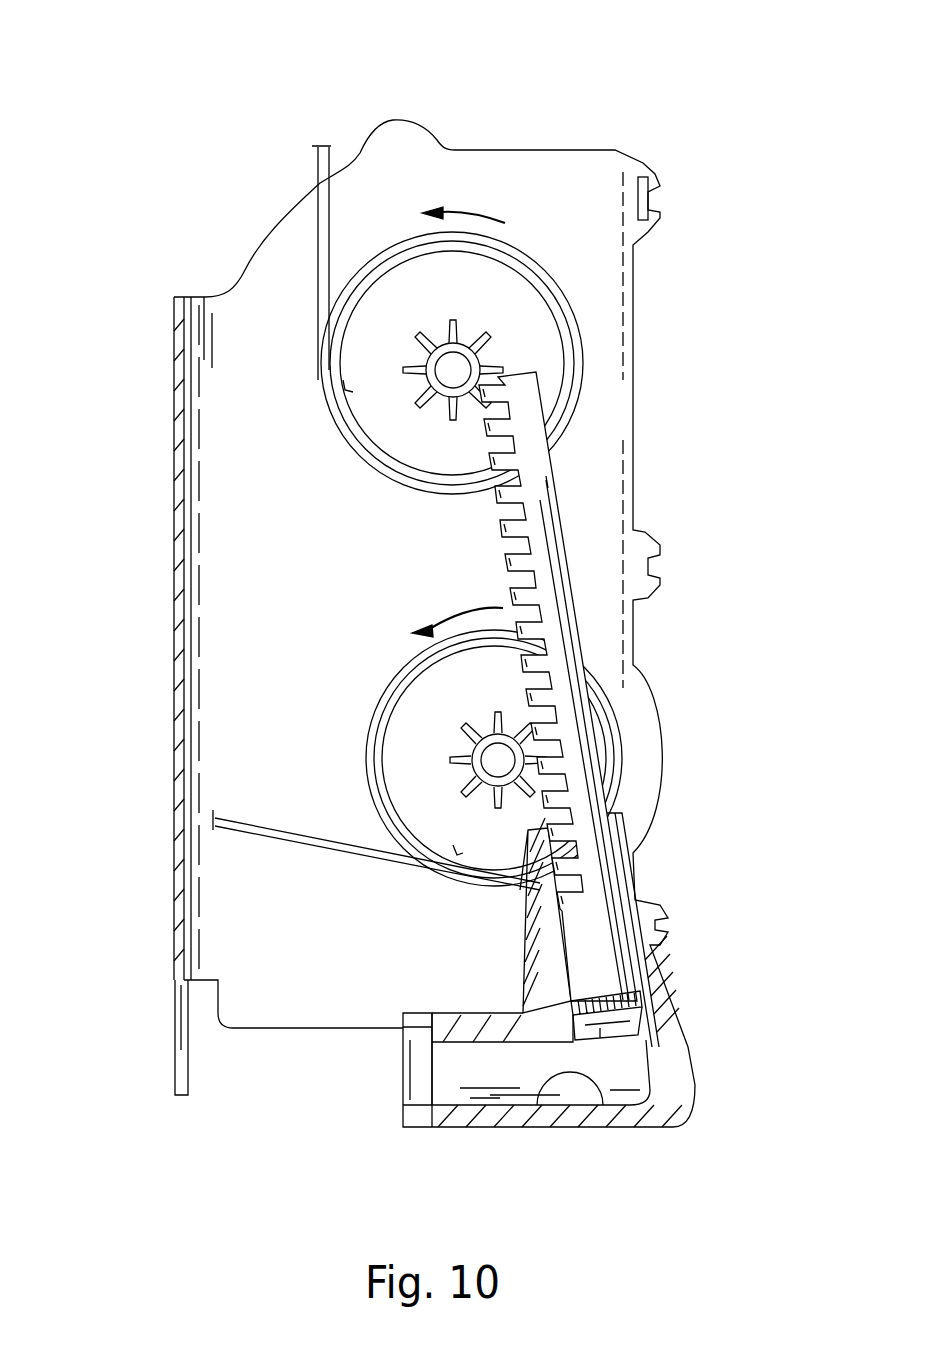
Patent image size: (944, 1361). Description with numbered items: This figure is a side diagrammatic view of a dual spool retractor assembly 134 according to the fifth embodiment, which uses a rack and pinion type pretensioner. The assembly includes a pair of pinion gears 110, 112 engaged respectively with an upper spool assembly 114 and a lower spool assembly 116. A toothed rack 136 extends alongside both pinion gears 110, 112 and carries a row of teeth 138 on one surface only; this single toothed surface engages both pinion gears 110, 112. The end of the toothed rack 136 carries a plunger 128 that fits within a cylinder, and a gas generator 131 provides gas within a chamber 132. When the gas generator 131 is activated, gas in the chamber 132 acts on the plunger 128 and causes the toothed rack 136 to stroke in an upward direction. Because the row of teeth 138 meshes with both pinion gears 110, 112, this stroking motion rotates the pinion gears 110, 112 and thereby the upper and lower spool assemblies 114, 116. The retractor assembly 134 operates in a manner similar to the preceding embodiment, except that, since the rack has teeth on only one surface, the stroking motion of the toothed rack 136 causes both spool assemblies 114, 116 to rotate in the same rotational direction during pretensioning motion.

The dual spool retractor assembly 134 is at (715, 118).
The pinion gear 110 is at (492, 363).
The upper spool assembly 114 is at (565, 354).
The toothed rack 136 is at (556, 469).
The row of teeth 138 is at (508, 532).
The lower spool assembly 116 is at (585, 748).
The pinion gear 112 is at (455, 752).
The plunger 128 is at (580, 1005).
The gas generator 131 is at (415, 1075).
The chamber 132 is at (583, 1085).